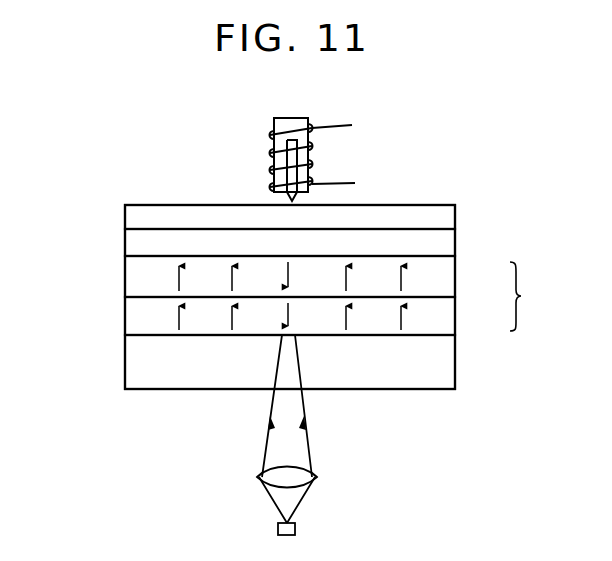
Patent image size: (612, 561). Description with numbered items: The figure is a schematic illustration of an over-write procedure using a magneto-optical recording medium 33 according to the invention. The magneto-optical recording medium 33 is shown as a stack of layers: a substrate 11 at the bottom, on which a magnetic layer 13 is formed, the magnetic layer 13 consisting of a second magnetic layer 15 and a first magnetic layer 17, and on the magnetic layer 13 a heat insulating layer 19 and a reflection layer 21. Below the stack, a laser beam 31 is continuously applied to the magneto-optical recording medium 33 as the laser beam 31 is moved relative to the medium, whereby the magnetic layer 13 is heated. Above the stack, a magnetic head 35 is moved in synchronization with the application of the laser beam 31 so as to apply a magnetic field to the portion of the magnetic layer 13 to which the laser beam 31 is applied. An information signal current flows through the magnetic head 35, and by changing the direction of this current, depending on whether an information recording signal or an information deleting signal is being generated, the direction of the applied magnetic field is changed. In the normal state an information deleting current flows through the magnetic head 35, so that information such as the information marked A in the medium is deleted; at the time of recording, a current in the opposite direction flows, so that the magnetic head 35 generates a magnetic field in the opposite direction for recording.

The substrate 11 is at (457, 370).
The magnetic layer 13 is at (530, 296).
The second magnetic layer 15 is at (457, 321).
The first magnetic layer 17 is at (457, 282).
The heat insulating layer 19 is at (457, 245).
The reflection layer 21 is at (457, 221).
The laser beam 31 is at (310, 451).
The magneto-optical recording medium 33 is at (116, 277).
The magnetic head 35 is at (275, 147).